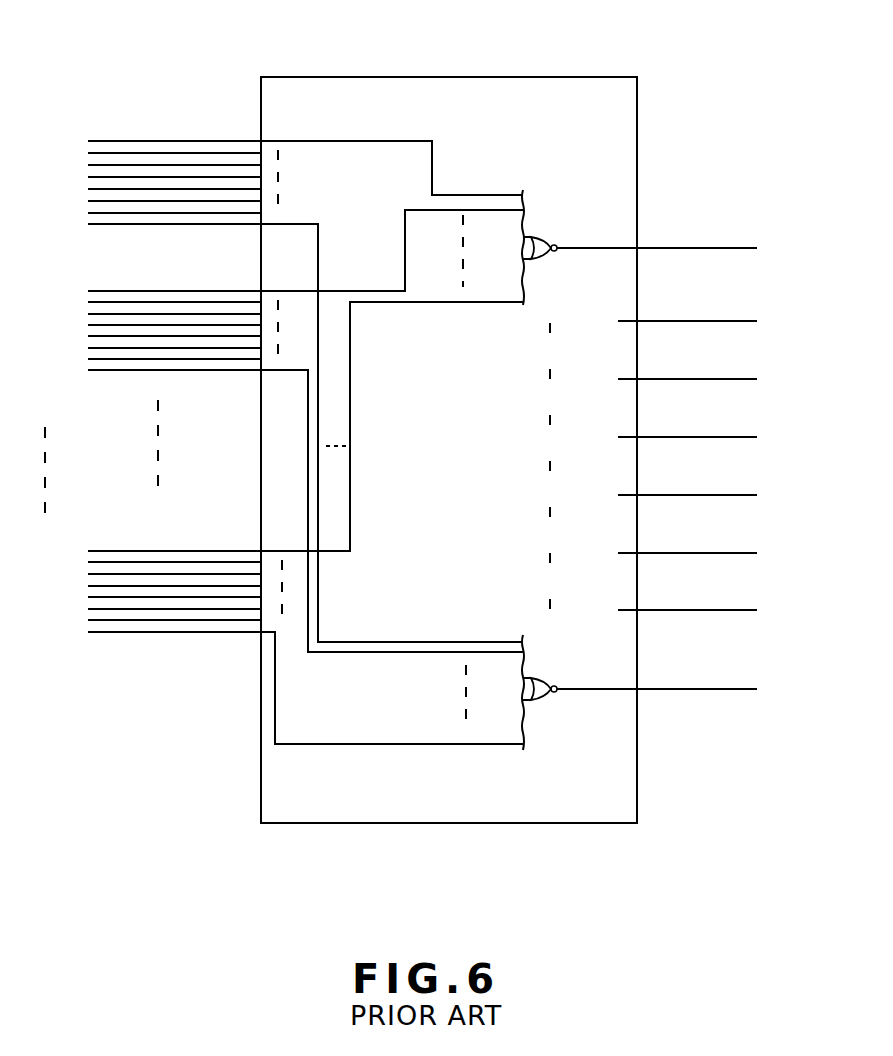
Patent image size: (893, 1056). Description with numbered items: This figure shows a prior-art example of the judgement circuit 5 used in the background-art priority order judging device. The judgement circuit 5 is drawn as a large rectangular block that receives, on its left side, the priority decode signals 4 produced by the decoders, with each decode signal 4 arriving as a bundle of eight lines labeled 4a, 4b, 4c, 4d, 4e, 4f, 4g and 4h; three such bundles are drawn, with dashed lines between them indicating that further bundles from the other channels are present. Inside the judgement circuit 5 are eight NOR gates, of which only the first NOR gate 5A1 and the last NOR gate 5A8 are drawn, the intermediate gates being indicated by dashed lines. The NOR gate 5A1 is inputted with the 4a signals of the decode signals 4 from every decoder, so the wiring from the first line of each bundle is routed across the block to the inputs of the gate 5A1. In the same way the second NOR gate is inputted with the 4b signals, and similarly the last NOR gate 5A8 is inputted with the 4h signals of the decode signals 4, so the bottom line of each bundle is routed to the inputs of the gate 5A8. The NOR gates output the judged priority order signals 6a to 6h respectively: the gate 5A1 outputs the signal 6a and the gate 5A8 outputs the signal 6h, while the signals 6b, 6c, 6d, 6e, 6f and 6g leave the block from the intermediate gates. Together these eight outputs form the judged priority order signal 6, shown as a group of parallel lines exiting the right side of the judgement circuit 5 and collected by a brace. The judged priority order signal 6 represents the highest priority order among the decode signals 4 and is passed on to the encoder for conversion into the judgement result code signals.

The priority decode signal 4 is at (67, 138).
The decode signal 4a is at (100, 141).
The decode signal 4b is at (135, 153).
The decode signal 4c is at (182, 165).
The decode signal 4d is at (233, 177).
The decode signal 4e is at (97, 189).
The decode signal 4f is at (133, 201).
The decode signal 4g is at (183, 213).
The decode signal 4h is at (233, 224).
The judgement circuit 5 is at (447, 68).
The NOR gate 5A1 is at (537, 238).
The NOR gate 5A8 is at (543, 700).
The judged priority order signal 6 is at (775, 235).
The judged priority order signal 6a is at (712, 247).
The judged priority order signal 6b is at (712, 321).
The judged priority order signal 6c is at (712, 379).
The judged priority order signal 6d is at (712, 437).
The judged priority order signal 6e is at (712, 495).
The judged priority order signal 6f is at (712, 553).
The judged priority order signal 6g is at (712, 610).
The judged priority order signal 6h is at (712, 689).